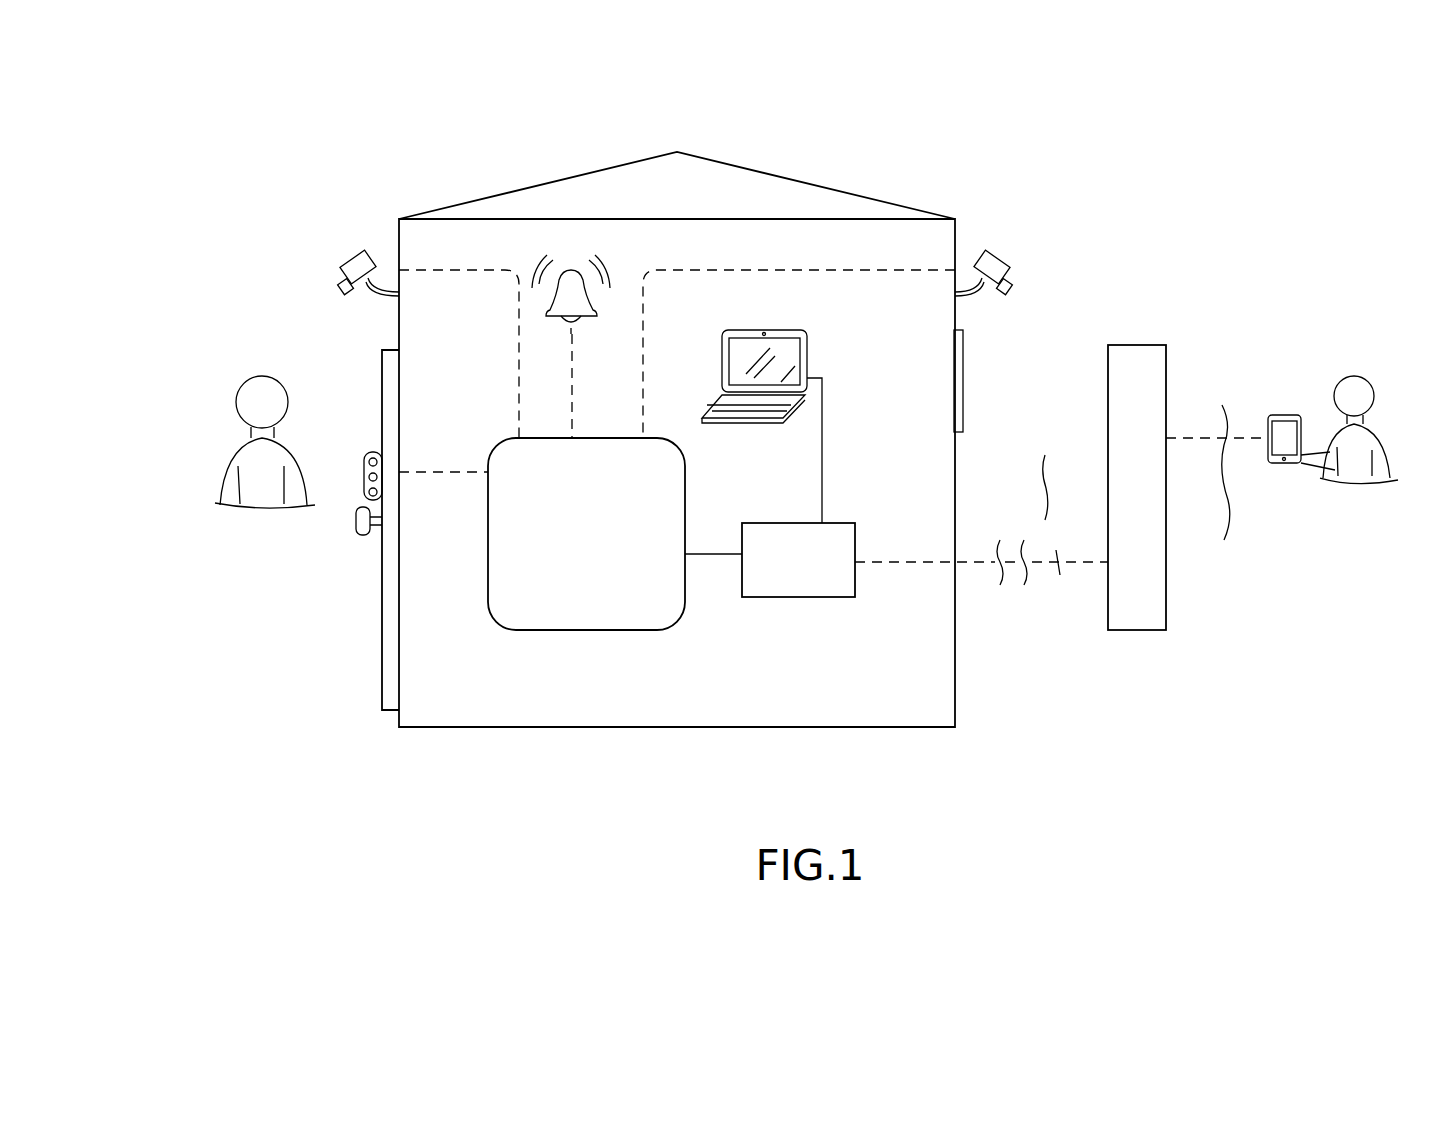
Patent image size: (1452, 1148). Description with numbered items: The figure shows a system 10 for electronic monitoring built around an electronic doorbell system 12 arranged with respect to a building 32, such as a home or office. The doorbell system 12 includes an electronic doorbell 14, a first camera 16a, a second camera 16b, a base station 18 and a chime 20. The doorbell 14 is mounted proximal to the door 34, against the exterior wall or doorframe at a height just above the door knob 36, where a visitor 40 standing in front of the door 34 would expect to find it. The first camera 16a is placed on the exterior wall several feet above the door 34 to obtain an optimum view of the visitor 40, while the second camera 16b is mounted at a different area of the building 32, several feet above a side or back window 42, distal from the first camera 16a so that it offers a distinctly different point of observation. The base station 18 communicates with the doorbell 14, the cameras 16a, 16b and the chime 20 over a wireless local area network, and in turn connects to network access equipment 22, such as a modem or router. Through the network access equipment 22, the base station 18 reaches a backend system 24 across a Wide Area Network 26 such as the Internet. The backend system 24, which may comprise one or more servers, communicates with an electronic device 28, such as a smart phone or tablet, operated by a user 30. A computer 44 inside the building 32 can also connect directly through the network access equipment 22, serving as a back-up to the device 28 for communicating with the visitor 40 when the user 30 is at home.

The system for electronic monitoring 10 is at (194, 171).
The electronic doorbell system 12 is at (318, 603).
The electronic doorbell 14 is at (363, 468).
The first camera 16a is at (352, 258).
The second camera 16b is at (998, 258).
The base station 18 is at (586, 534).
The chime 20 is at (610, 248).
The network access equipment 22 is at (785, 597).
The backend system 24 is at (1135, 462).
The Wide Area Network 26 is at (1152, 655).
The electronic device 28 is at (1275, 415).
The user 30 is at (1378, 378).
The building 32 is at (465, 727).
The door 34 is at (382, 658).
The door knob 36 is at (358, 535).
The visitor 40 is at (242, 372).
The side or back window 42 is at (963, 412).
The computer 44 is at (807, 338).